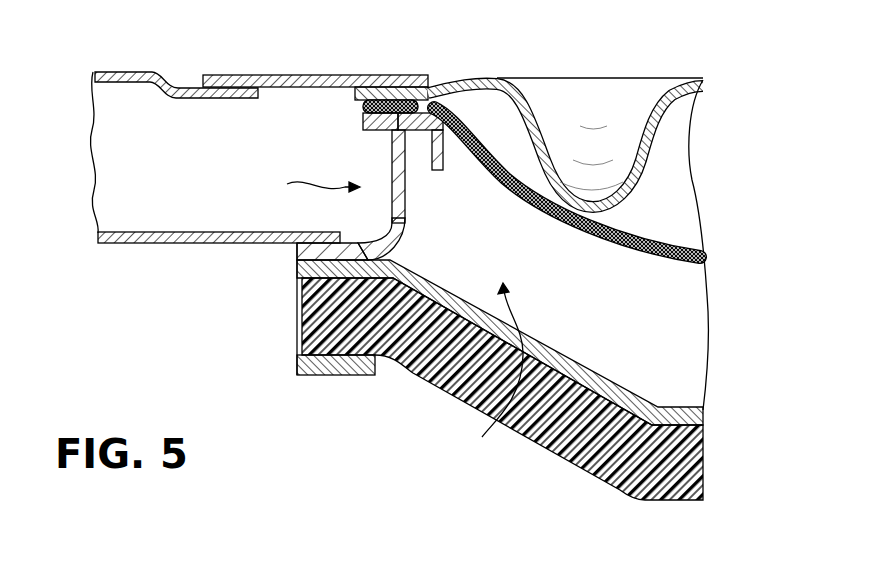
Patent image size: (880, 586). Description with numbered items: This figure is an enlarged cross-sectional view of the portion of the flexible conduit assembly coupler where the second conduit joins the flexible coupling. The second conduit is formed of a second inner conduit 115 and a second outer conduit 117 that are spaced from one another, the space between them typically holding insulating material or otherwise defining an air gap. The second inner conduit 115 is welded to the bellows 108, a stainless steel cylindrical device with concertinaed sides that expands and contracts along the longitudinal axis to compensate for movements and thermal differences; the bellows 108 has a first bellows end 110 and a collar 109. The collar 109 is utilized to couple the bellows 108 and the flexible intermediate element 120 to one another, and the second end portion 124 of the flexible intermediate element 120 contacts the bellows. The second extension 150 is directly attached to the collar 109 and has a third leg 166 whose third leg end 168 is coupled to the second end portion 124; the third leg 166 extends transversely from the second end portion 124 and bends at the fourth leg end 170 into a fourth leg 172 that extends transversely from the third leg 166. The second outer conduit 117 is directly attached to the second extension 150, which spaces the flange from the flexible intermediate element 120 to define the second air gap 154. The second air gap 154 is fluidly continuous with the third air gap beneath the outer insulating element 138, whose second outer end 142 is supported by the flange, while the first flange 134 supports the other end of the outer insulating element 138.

The bellows 108 is at (547, 122).
The collar 109 is at (363, 130).
The first bellows end 110 is at (380, 92).
The second inner conduit 115 is at (253, 75).
The second outer conduit 117 is at (167, 246).
The flexible intermediate element 120 is at (630, 256).
The second end portion 124 is at (360, 107).
The first flange 134 is at (491, 374).
The outer insulating element 138 is at (607, 463).
The second outer end 142 is at (349, 337).
The second extension 150 is at (303, 184).
The second air gap 154 is at (440, 370).
The third leg 166 is at (400, 170).
The third leg end 168 is at (403, 106).
The fourth leg end 170 is at (395, 237).
The fourth leg 172 is at (350, 250).